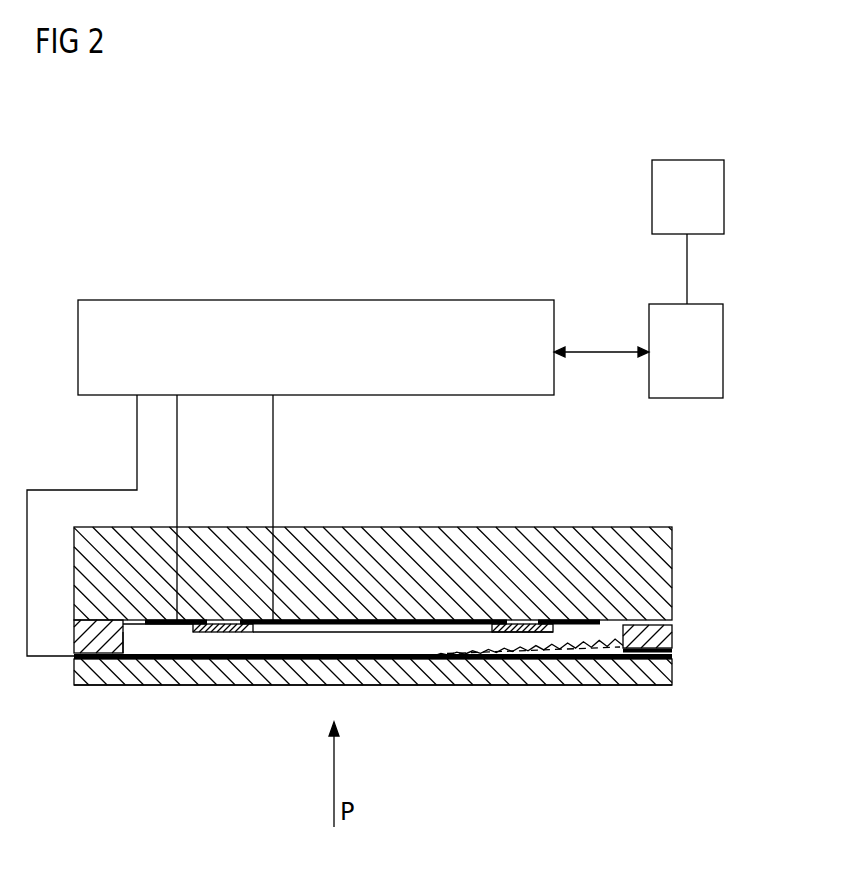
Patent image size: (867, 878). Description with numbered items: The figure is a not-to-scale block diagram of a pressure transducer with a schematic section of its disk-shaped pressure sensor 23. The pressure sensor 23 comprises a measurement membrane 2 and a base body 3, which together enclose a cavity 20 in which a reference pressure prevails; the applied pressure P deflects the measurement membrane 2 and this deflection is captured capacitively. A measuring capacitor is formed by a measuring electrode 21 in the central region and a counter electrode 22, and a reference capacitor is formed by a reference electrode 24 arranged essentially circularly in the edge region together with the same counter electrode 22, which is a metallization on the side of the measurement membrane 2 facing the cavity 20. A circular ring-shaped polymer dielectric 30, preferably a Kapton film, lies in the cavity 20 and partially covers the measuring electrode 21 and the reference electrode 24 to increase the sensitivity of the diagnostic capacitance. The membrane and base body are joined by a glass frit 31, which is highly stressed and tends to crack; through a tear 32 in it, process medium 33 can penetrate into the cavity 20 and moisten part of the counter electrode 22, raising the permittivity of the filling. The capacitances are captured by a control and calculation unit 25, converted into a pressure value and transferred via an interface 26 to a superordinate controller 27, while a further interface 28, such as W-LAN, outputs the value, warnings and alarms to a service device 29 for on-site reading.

The measurement membrane 2 is at (364, 672).
The base body 3 is at (477, 535).
The cavity 20 is at (161, 640).
The measuring electrode 21 is at (284, 634).
The counter electrode 22 is at (404, 680).
The pressure sensor 23 is at (391, 504).
The reference electrode 24 is at (571, 620).
The control and calculation unit 25 is at (246, 300).
The interface 26 is at (596, 350).
The superordinate controller 27 is at (692, 398).
The interface 28 is at (687, 265).
The service device 29 is at (688, 160).
The polymer dielectric 30 is at (224, 633).
The glass frit 31 is at (97, 655).
The tear 32 is at (672, 657).
The process medium 33 is at (560, 650).